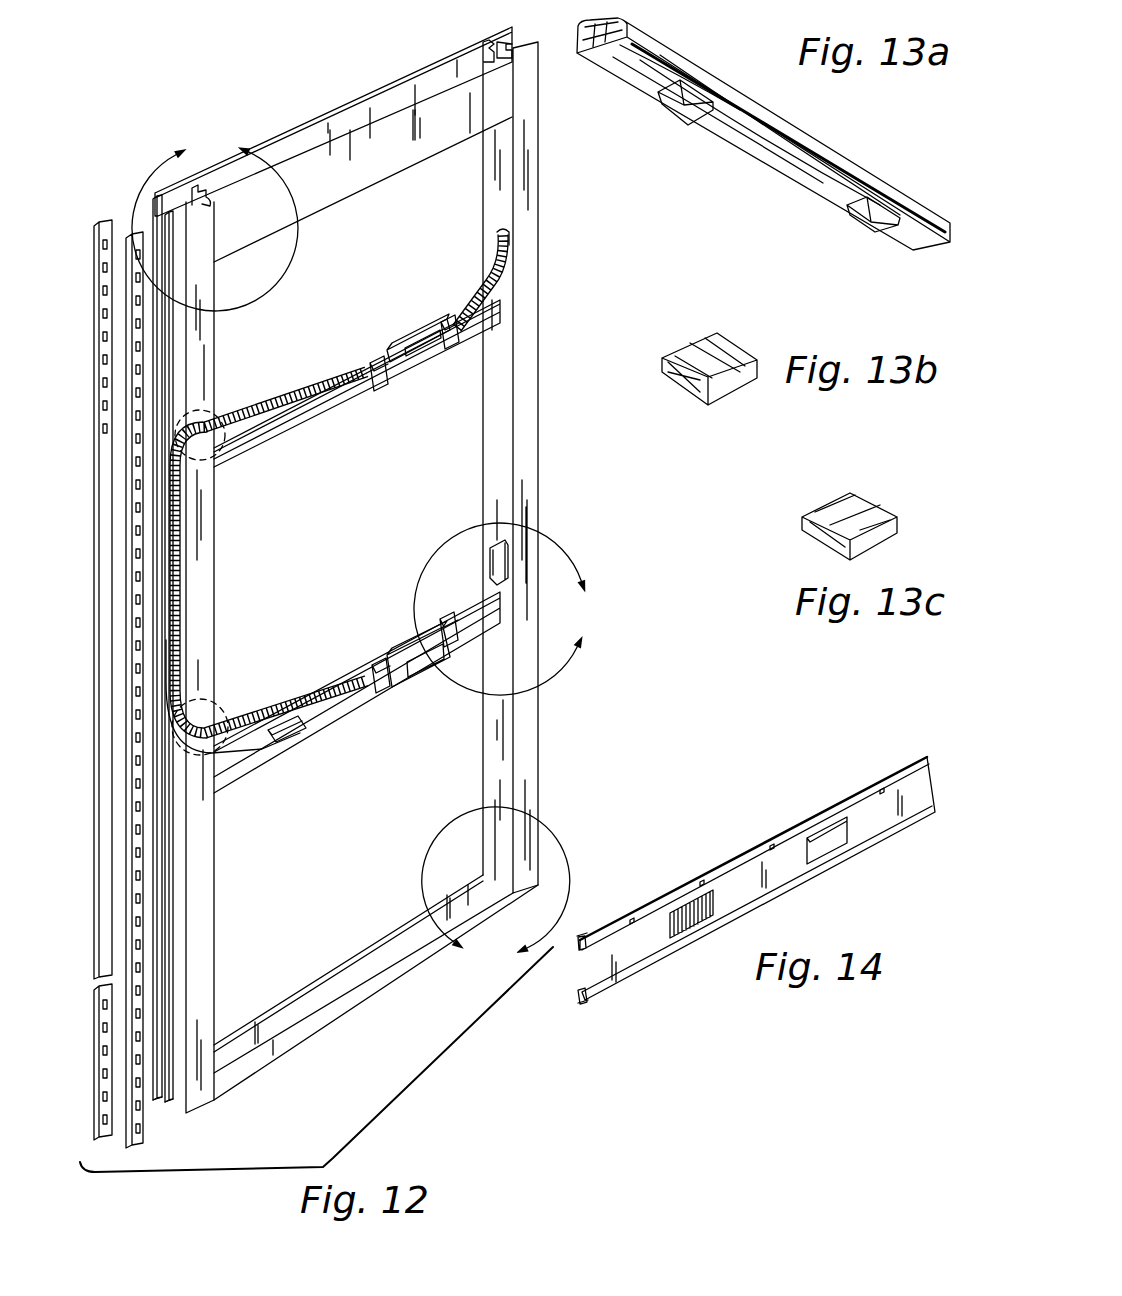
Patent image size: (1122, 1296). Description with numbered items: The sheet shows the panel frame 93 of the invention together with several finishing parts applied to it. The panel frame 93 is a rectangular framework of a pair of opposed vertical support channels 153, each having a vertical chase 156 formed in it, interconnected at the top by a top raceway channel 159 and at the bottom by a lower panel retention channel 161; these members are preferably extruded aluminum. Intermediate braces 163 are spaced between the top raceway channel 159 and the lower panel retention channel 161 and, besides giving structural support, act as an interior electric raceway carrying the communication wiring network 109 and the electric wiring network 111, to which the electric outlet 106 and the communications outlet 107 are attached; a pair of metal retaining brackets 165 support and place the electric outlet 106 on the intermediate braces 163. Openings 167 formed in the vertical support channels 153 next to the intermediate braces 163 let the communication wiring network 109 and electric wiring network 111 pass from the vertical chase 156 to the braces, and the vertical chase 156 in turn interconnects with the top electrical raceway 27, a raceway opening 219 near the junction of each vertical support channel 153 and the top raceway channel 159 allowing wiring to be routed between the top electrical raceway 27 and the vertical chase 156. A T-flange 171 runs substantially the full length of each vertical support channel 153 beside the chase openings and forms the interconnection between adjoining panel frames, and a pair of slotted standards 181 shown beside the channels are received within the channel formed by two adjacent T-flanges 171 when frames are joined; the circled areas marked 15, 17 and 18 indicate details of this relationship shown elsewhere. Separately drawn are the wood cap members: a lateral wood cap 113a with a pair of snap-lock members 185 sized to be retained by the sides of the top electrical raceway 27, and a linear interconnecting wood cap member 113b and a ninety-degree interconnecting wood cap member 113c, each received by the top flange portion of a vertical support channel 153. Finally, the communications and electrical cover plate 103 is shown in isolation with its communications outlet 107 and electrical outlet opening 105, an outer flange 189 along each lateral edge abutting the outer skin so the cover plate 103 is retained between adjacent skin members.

In FIG. 12, the top electrical raceway 27 is at (340, 118).
In FIG. 12, the panel frame 93 is at (552, 454).
In FIG. 12, the electric outlet 106 is at (430, 345).
In FIG. 12, the communications outlet 107 is at (296, 743).
In FIG. 14, the communications outlet 107 is at (692, 932).
In FIG. 12, the communication wiring network 109 is at (262, 755).
In FIG. 12, the electric wiring network 111 is at (282, 395).
In FIG. 12, the vertical support channel 153 is at (538, 187).
In FIG. 12, the vertical chase 156 is at (180, 1097).
In FIG. 12, the top raceway channel 159 is at (397, 160).
In FIG. 12, the lower panel retention channel 161 is at (333, 1010).
In FIG. 12, the intermediate brace 163 is at (325, 408).
In FIG. 12, the metal retaining bracket 165 is at (455, 315).
In FIG. 12, the opening 167 is at (205, 415).
In FIG. 12, the T-flange 171 is at (173, 303).
In FIG. 12, the slotted standard 181 is at (128, 290).
In FIG. 12, the raceway opening 219 is at (208, 198).
In FIG. 12, the section circle 15 is at (215, 213).
In FIG. 12, the section circle 17 is at (511, 609).
In FIG. 12, the section circle 18 is at (496, 892).
In FIG. 13A, the lateral wood cap 113a is at (817, 138).
In FIG. 13B, the linear interconnecting wood cap member 113b is at (712, 345).
In FIG. 13C, the 90° interconnecting wood cap member 113c is at (853, 500).
In FIG. 13A, the snap-lock member 185 is at (697, 112).
In FIG. 14, the communications and electrical cover plate 103 is at (745, 885).
In FIG. 14, the electrical outlet opening 105 is at (830, 838).
In FIG. 14, the outer flange 189 is at (588, 937).